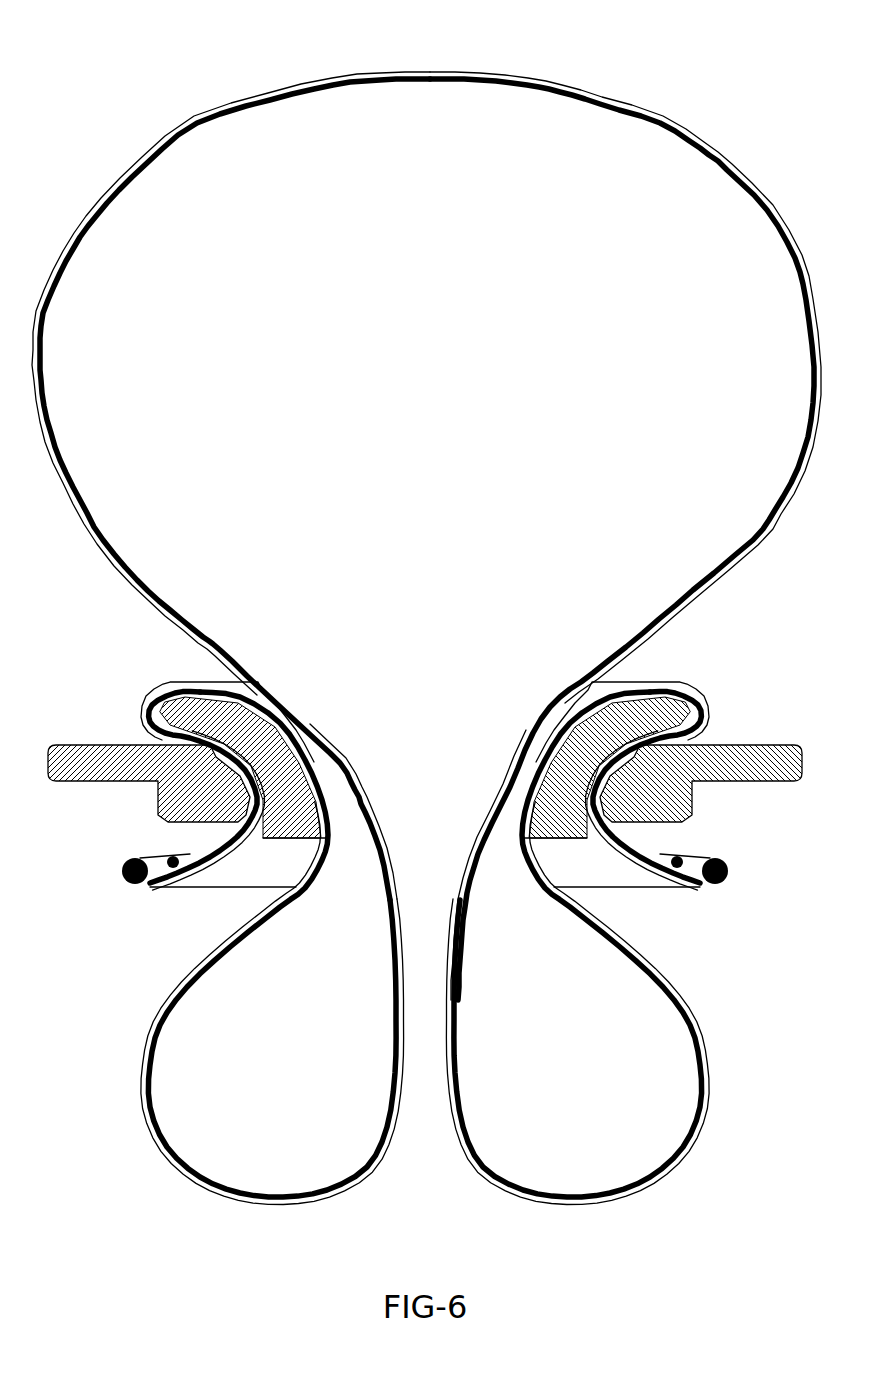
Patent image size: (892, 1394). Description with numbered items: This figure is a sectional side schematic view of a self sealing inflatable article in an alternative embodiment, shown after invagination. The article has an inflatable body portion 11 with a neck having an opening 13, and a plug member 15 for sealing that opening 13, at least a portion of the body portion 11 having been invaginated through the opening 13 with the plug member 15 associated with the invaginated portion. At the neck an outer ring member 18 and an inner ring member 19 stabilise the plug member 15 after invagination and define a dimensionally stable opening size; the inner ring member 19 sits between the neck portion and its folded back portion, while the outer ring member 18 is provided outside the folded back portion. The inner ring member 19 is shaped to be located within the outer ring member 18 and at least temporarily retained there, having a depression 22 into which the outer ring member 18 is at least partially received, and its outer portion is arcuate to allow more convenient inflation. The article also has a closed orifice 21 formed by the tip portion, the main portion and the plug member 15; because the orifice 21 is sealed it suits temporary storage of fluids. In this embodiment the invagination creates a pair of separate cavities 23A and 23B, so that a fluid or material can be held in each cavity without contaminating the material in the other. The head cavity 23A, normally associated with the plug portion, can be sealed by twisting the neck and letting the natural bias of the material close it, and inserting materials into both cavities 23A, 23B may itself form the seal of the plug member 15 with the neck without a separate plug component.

The plug member 15 is at (822, 83).
The inflatable body portion 11 is at (147, 1195).
The opening 13 is at (216, 676).
The outer ring member 18 is at (64, 741).
The depression 22 is at (250, 763).
The inner ring member 19 is at (258, 843).
The closed orifice 21 is at (406, 1186).
The cavity 23A is at (426, 536).
The cavity 23B is at (425, 948).